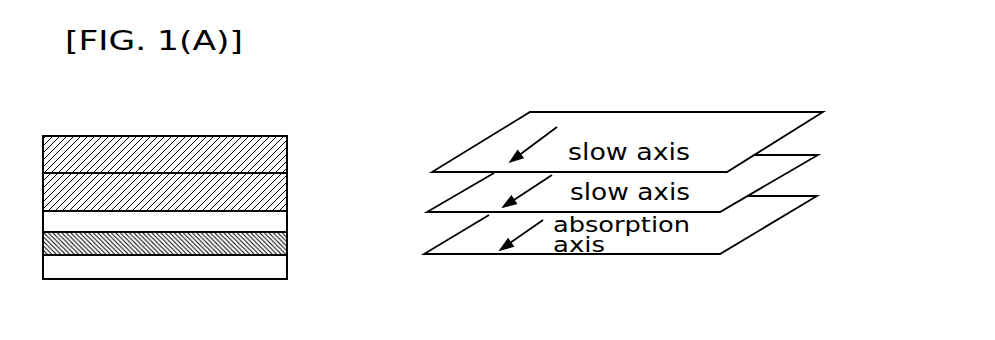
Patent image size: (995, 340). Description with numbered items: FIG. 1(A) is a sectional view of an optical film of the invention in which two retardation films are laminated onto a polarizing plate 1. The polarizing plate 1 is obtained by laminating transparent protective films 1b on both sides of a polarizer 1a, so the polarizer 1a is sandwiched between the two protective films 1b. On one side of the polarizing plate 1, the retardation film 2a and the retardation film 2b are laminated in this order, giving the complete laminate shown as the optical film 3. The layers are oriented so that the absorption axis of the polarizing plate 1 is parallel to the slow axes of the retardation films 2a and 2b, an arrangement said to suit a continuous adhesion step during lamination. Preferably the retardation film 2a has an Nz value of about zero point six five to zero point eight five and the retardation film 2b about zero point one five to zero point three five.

The polarizing plate 1 is at (355, 218).
The polarizer 1a is at (287, 245).
The transparent protective film 1b is at (287, 224).
The retardation film 2a is at (287, 193).
The retardation film 2b is at (287, 156).
The elliptically polarizing plate 3 is at (377, 142).